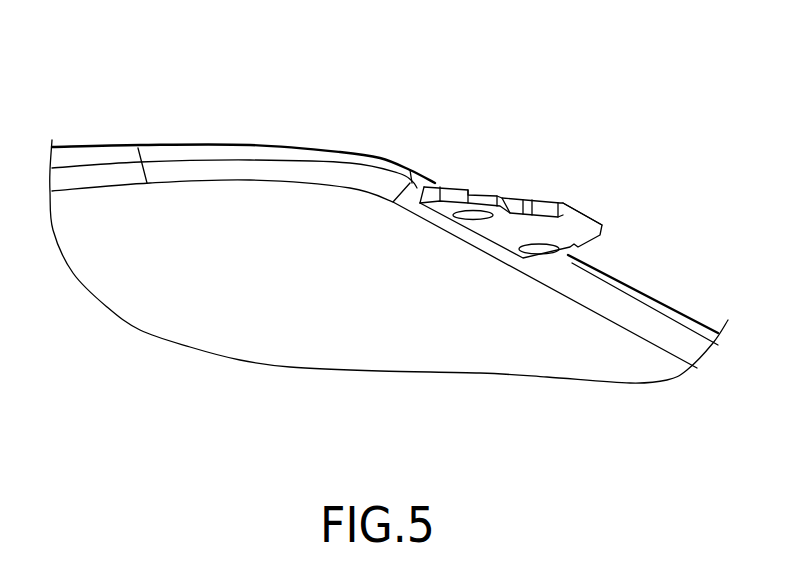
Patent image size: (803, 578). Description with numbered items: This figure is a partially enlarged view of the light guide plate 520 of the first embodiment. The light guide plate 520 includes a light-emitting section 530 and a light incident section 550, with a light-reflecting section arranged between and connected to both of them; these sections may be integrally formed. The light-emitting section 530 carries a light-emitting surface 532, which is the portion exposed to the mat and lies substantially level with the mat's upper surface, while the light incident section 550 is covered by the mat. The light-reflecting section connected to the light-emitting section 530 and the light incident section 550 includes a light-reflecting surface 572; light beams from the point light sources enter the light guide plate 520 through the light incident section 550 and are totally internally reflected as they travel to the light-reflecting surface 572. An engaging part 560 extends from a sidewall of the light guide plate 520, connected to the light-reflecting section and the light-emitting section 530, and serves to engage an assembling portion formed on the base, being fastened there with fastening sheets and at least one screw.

The light guide plate 520 is at (389, 202).
The light-emitting section 530 is at (367, 157).
The light-emitting surface 532 is at (208, 143).
The light-reflecting surface 572 is at (277, 161).
The light incident section 550 is at (217, 315).
The engaging part 560 is at (580, 242).